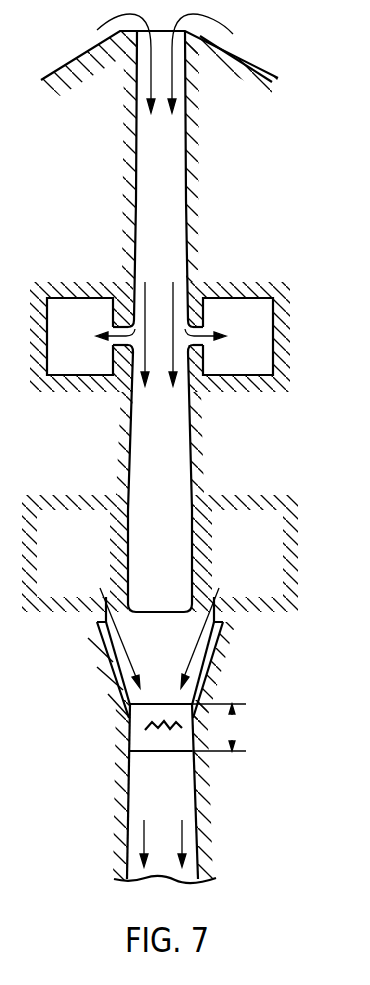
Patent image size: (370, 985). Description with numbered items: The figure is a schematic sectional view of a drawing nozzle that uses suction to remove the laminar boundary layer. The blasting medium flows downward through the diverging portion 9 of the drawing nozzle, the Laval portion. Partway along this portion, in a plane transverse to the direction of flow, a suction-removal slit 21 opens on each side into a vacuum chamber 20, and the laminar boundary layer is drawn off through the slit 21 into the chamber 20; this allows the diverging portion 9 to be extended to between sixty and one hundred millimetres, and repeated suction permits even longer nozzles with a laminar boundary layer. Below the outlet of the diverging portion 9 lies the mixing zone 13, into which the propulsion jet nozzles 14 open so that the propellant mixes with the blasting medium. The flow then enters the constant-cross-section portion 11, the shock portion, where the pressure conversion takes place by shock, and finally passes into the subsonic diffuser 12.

The diverging portion of the drawing nozzle 9 is at (192, 212).
The vacuum chamber 20 is at (73, 312).
The suction-removal slit 21 is at (120, 380).
The propulsion jet nozzle 14 is at (102, 604).
The mixing zone 13 is at (163, 652).
The portion of the drawing nozzle with a constant cross-section 11 is at (188, 727).
The subsonic diffuser 12 is at (188, 827).